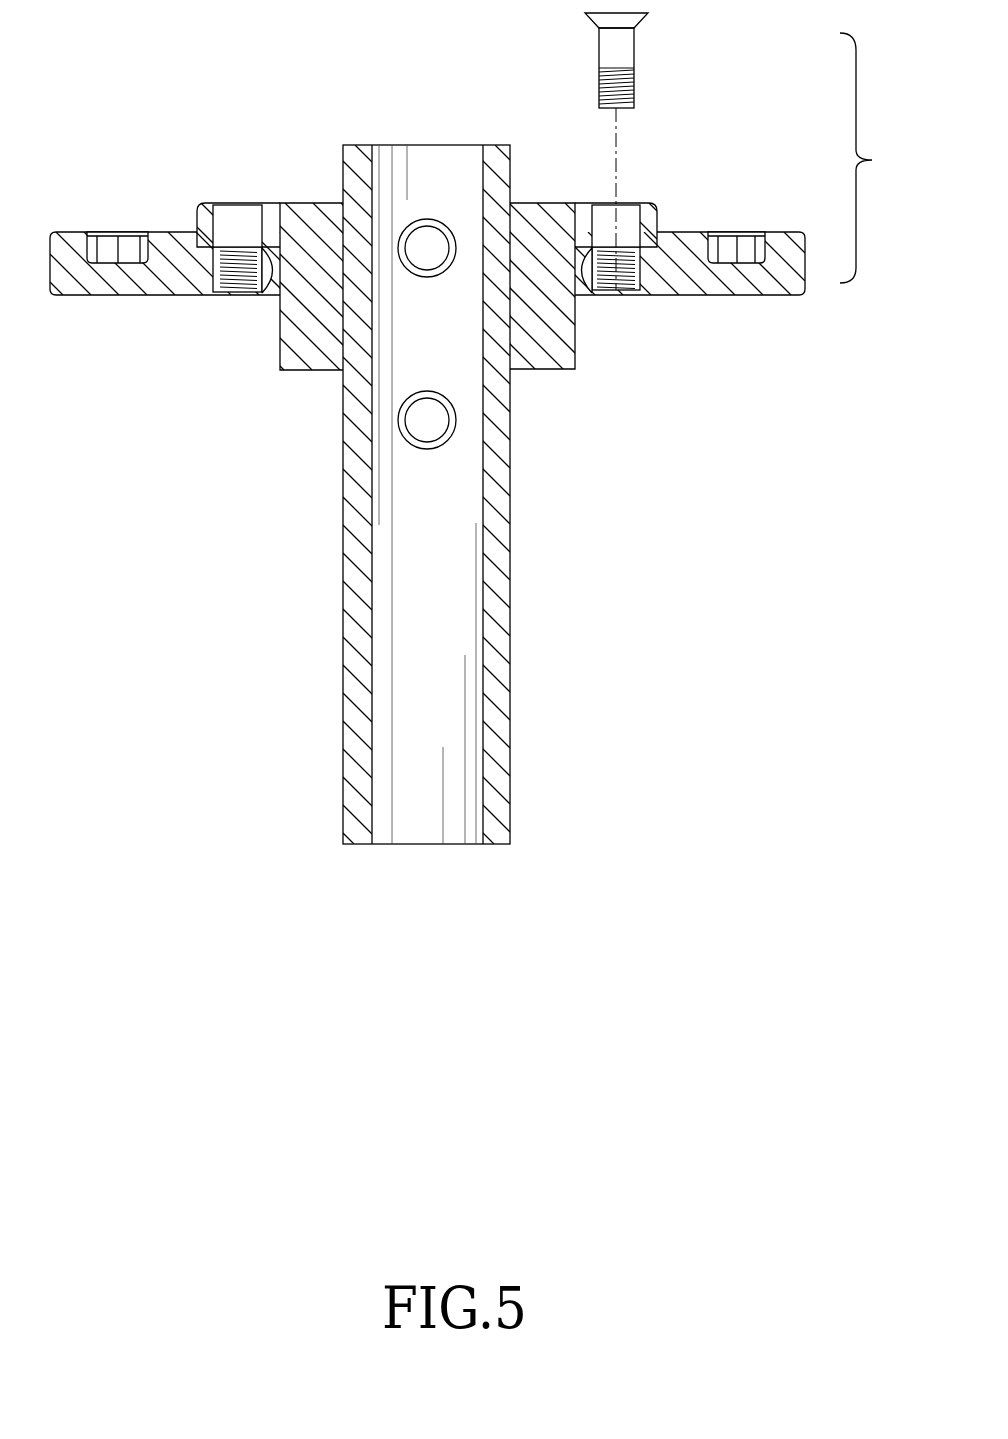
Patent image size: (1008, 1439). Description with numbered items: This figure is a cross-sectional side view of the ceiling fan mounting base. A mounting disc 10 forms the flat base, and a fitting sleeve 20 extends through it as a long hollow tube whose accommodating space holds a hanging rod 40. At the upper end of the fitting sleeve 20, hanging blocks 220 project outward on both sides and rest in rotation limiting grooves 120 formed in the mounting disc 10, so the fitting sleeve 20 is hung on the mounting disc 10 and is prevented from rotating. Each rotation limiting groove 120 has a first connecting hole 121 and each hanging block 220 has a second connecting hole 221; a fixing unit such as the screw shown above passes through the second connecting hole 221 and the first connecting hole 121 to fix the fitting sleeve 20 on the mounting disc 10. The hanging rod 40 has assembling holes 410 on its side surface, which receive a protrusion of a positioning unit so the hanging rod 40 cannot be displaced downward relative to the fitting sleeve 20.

The mounting disc 10 is at (775, 295).
The rotation limiting groove 120 is at (192, 257).
The first connecting hole 121 is at (617, 293).
The fitting sleeve 20 is at (454, 241).
The hanging block 220 is at (298, 203).
The second connecting hole 221 is at (628, 210).
The hanging rod 40 is at (420, 494).
The assembling hole 410 is at (400, 433).